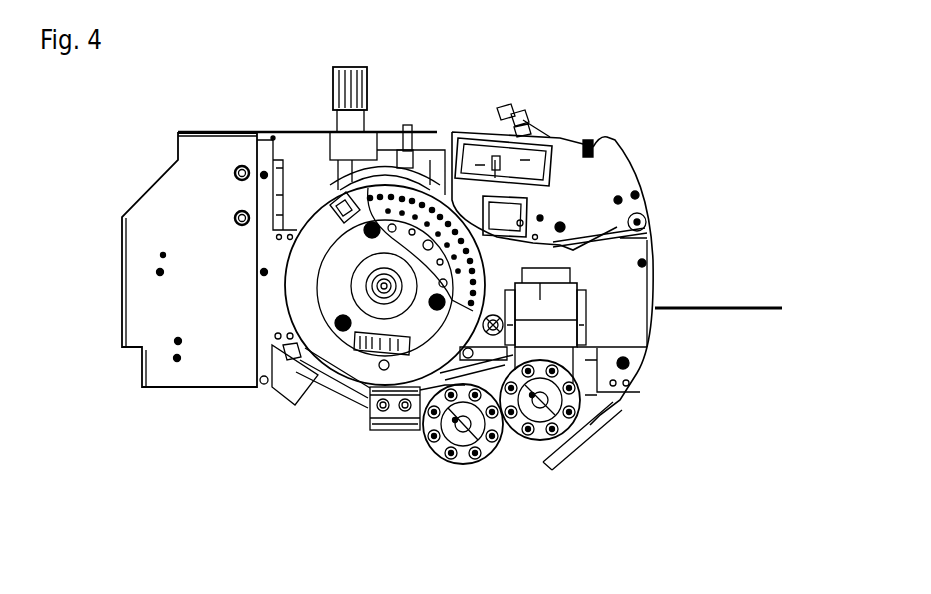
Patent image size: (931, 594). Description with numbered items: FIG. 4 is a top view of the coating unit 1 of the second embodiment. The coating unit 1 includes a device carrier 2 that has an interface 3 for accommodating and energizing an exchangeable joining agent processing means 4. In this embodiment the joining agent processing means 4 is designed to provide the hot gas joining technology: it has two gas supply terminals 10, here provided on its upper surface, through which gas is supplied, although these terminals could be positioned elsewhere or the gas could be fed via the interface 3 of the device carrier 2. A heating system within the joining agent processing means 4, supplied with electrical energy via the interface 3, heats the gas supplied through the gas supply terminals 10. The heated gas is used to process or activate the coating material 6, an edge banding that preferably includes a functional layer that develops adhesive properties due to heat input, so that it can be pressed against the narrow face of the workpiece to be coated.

The coating unit 1 is at (120, 162).
The device carrier 2 is at (500, 110).
The interface 3 is at (538, 307).
The joining agent processing means 4 is at (515, 345).
The coating material 6 is at (680, 310).
The gas supply terminals 10 is at (533, 442).